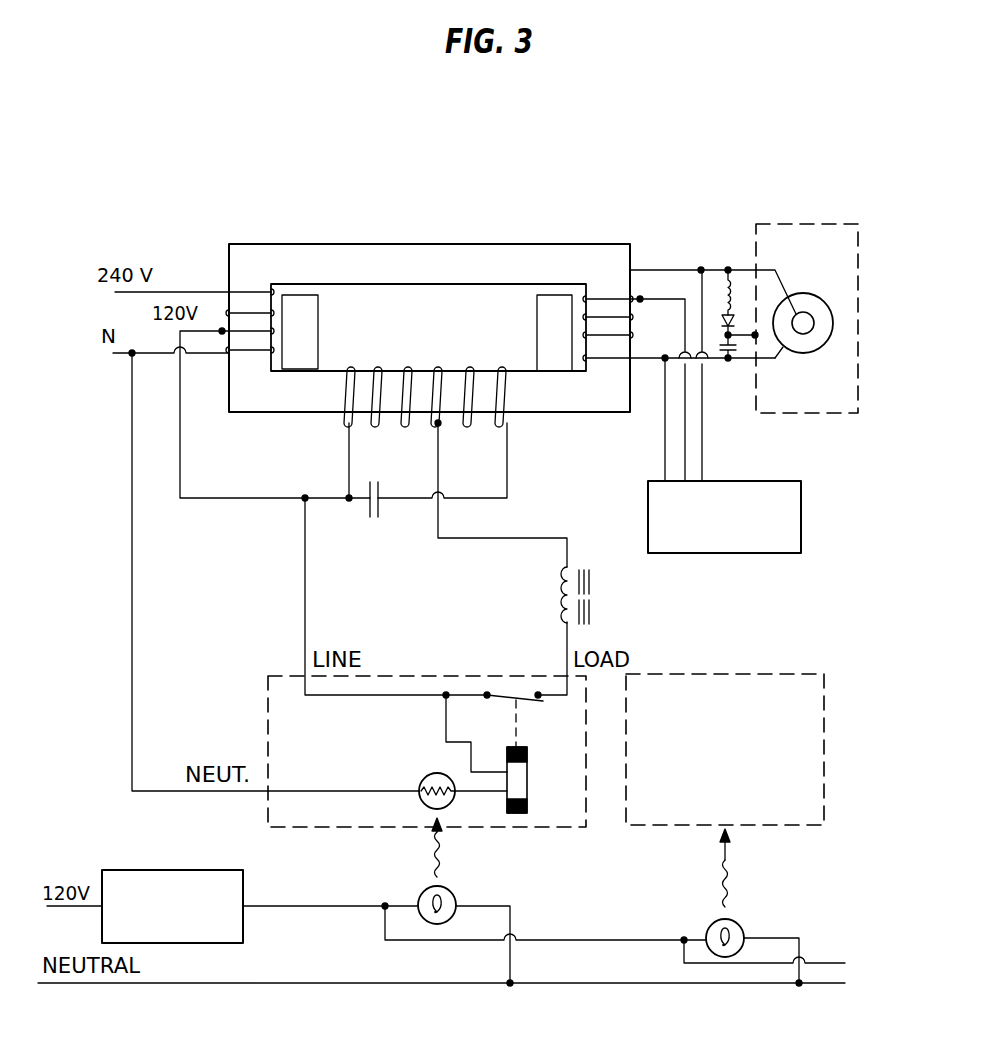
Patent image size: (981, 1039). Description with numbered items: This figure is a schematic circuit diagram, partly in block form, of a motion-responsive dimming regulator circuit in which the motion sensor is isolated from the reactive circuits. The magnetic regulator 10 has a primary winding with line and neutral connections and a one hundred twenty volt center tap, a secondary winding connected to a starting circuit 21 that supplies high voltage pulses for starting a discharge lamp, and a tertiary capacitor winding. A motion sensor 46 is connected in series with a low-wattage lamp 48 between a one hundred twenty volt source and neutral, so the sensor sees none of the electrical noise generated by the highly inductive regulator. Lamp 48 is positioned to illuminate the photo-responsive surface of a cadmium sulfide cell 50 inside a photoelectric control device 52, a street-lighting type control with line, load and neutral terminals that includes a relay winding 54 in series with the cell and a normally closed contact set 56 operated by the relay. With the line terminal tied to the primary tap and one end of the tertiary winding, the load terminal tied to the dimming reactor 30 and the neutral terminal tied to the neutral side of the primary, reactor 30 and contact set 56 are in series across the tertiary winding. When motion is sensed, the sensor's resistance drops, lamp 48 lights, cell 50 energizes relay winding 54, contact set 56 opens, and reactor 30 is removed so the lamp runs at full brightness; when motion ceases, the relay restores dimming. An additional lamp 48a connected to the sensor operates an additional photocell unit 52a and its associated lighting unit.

The magnetic regulator 10 is at (464, 229).
The starting circuit 21 is at (801, 492).
The dimming reactor 30 is at (593, 600).
The motion sensor 46 is at (193, 869).
The low-wattage lamp 48 is at (421, 892).
The additional lamp 48a is at (711, 924).
The cadmium sulfide cell 50 is at (432, 773).
The photoelectric control device 52 is at (523, 828).
The additional photocell unit 52a is at (693, 825).
The relay winding 54 is at (527, 791).
The contact set 56 is at (520, 690).